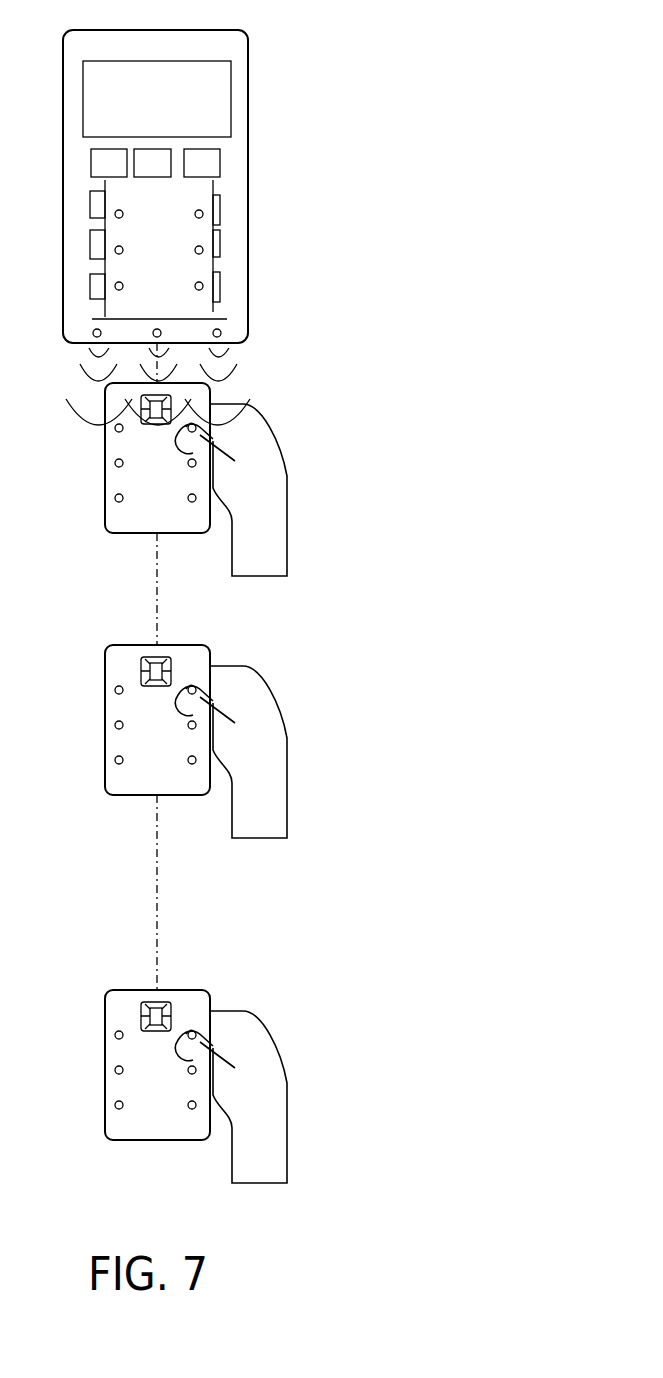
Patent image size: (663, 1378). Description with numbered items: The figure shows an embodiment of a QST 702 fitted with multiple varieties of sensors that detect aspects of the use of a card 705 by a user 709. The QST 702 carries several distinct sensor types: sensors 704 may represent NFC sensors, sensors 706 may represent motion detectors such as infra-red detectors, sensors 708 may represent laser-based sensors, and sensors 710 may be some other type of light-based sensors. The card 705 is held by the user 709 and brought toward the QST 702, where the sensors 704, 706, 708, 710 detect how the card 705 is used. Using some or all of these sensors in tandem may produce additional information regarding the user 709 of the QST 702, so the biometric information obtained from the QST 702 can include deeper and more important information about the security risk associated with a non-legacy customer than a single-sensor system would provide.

The QST 702 is at (248, 157).
The sensors 704 is at (221, 333).
The card 705 is at (212, 393).
The sensors 706 is at (203, 286).
The sensors 708 is at (203, 250).
The user 709 is at (288, 485).
The sensors 710 is at (203, 214).